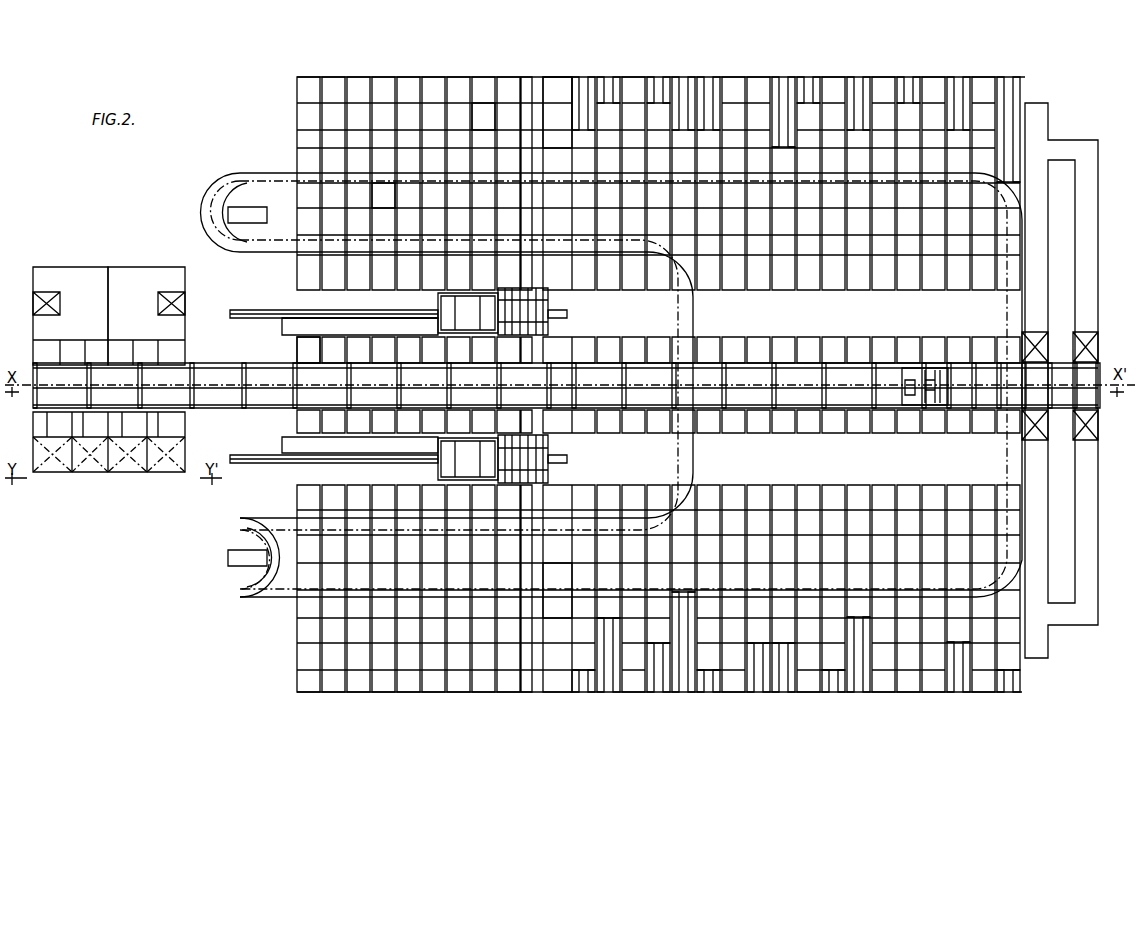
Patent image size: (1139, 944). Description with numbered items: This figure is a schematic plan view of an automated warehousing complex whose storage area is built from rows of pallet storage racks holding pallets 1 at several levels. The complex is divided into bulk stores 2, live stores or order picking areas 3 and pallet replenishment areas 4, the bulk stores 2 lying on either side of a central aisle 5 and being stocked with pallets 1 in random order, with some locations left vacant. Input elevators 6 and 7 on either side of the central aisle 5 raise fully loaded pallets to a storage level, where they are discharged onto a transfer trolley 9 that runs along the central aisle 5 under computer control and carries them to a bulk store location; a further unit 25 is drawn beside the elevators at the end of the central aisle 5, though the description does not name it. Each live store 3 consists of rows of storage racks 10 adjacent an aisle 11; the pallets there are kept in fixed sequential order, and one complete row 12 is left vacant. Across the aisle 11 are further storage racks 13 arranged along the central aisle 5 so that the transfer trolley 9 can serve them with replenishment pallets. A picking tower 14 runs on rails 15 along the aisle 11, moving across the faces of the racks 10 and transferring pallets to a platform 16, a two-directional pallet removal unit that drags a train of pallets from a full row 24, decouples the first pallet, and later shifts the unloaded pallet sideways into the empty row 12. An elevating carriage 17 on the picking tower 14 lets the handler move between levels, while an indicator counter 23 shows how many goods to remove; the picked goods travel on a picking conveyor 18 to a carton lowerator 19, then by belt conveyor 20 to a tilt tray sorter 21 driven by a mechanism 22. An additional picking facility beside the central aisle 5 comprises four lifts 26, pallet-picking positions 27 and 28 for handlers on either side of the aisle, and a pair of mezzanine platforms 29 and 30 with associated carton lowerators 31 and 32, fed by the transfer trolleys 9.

The pallet 1 is at (504, 116).
The bulk store 2 is at (735, 128).
The live store 3 is at (410, 125).
The pallet replenishment area 4 is at (400, 349).
The central aisle 5 is at (130, 398).
The input elevator 6 is at (1045, 346).
The input elevator 7 is at (1045, 428).
The transfer trolley 9 is at (903, 398).
The storage rack 10 is at (408, 198).
The aisle 11 is at (362, 298).
The vacant row 12 is at (540, 198).
The storage rack 13 is at (298, 349).
The picking tower 14 is at (538, 290).
The rail 15 is at (284, 310).
The platform 16 is at (542, 326).
The elevating carriage 17 is at (438, 299).
The picking conveyor 18 is at (440, 320).
The carton lowerator 19 is at (464, 318).
The belt conveyor 20 is at (282, 327).
The tilt tray sorter 21 is at (267, 254).
The drive mechanism 22 is at (266, 214).
The indicator counter 23 is at (485, 318).
The full row 24 is at (505, 77).
The transfer switch 25 is at (1100, 346).
The lift 26 is at (85, 475).
The pallet-picking position 27 is at (63, 348).
The pallet-picking position 28 is at (53, 436).
The mezzanine platform 29 is at (65, 268).
The mezzanine platform 30 is at (141, 268).
The carton lowerator 31 is at (58, 303).
The carton lowerator 32 is at (182, 303).